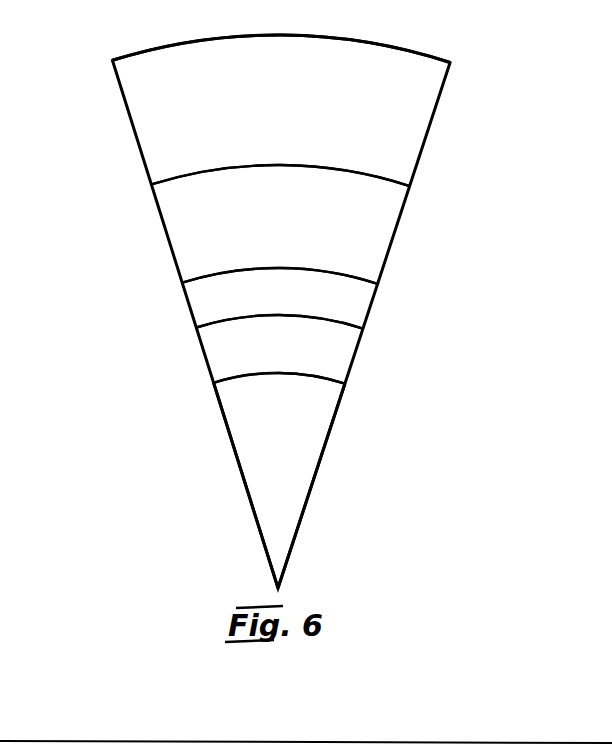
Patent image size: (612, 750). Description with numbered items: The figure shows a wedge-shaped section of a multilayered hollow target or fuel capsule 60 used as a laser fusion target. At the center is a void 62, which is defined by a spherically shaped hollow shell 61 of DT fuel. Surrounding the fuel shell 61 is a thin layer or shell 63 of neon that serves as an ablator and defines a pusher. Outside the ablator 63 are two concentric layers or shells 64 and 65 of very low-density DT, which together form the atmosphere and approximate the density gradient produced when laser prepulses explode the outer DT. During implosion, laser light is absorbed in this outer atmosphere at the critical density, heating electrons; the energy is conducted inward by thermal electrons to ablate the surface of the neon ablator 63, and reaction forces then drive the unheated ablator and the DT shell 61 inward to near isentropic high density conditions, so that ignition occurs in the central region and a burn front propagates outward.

The multilayered hollow target 60 is at (367, 358).
The hollow shell 61 is at (265, 352).
The void 62 is at (265, 458).
The ablator shell 63 is at (265, 306).
The shell 64 is at (265, 232).
The shell 65 is at (265, 111).